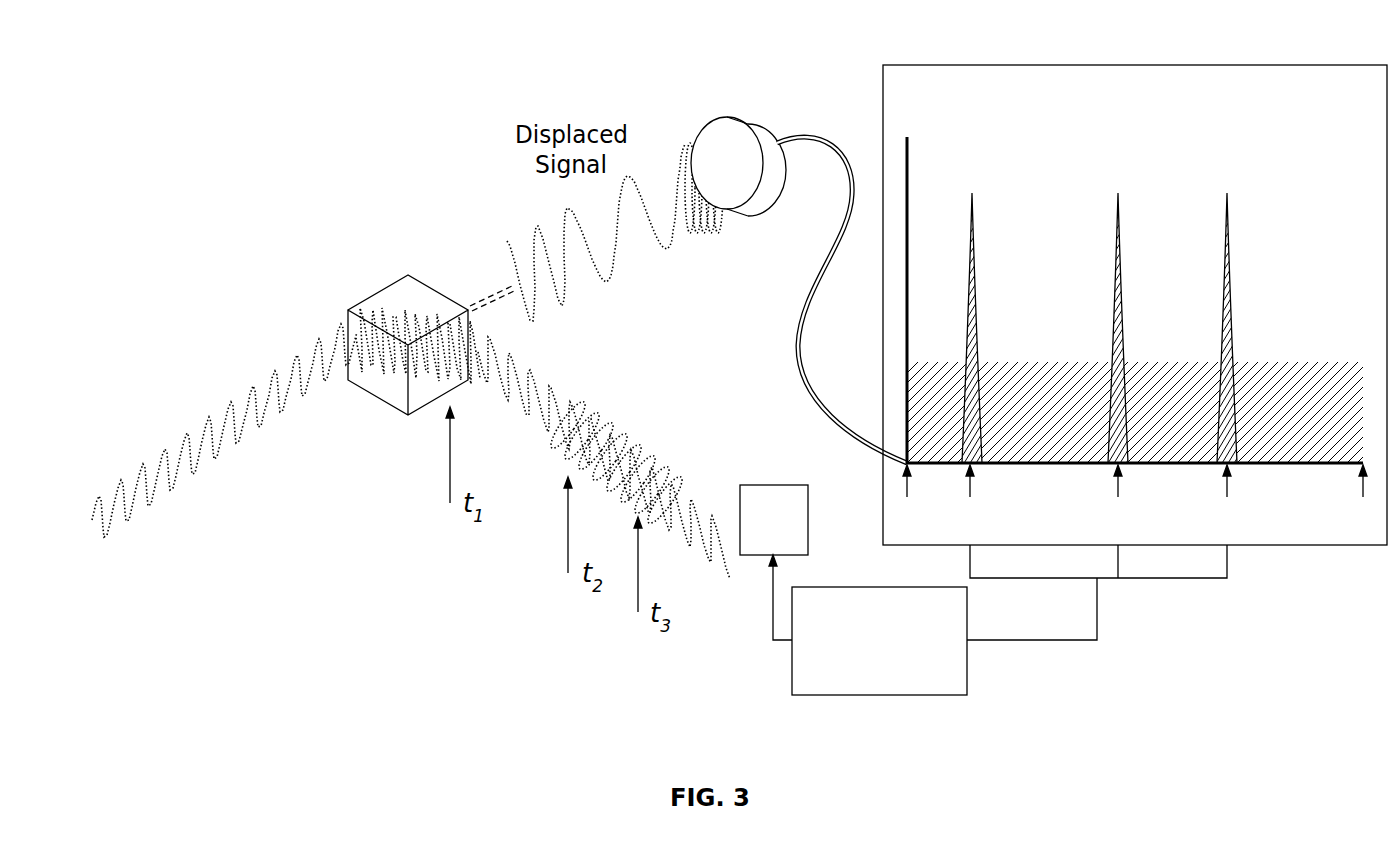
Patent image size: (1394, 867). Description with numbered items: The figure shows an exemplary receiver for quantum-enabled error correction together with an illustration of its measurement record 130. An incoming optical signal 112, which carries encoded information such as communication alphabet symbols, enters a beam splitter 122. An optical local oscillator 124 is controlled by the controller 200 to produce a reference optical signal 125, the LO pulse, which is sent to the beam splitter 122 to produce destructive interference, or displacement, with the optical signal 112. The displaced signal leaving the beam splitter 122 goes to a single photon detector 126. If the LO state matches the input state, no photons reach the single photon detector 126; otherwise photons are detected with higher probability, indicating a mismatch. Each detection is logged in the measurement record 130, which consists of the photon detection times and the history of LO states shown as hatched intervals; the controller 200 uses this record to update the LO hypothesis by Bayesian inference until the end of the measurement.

The optical signal 112 is at (90, 503).
The beam splitter 122 is at (432, 282).
The optical local oscillator 124 is at (790, 532).
The reference optical signal 125 is at (693, 437).
The single photon detector 126 is at (728, 112).
The measurement record 130 is at (1133, 65).
The controller 200 is at (877, 695).